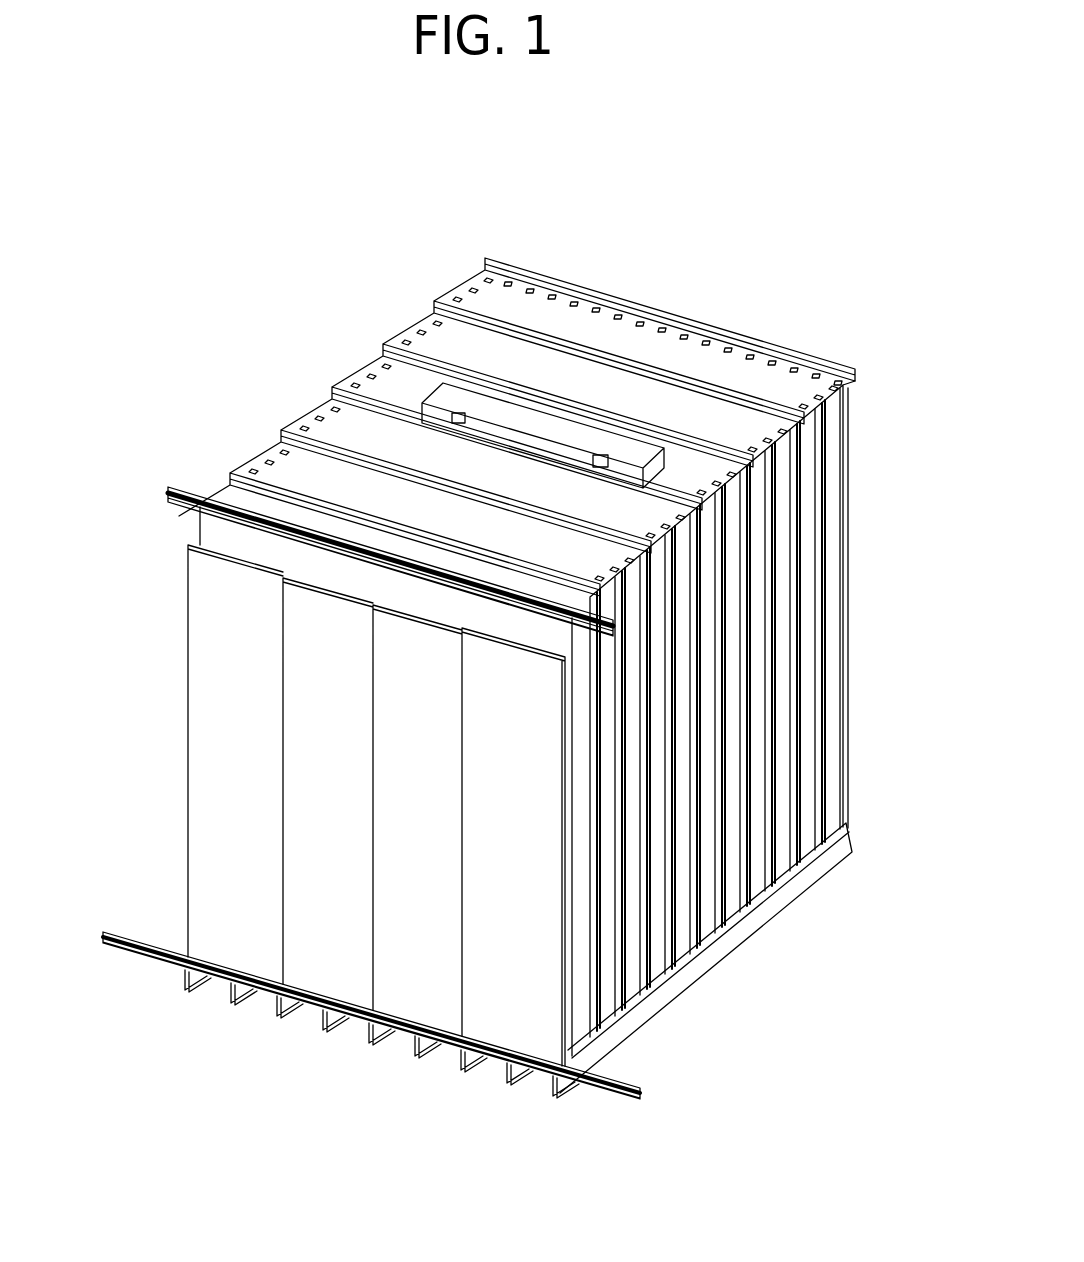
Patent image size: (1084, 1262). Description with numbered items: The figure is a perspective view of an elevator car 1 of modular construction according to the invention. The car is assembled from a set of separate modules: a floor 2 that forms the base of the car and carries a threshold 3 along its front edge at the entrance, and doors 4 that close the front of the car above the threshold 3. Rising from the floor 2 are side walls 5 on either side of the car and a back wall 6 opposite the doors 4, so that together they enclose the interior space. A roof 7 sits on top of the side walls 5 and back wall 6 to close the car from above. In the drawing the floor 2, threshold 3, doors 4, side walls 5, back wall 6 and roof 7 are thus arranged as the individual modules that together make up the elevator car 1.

The elevator car 1 is at (786, 951).
The floor 2 is at (682, 1006).
The threshold 3 is at (120, 972).
The doors 4 is at (322, 787).
The side walls 5 is at (236, 438).
The back wall 6 is at (682, 298).
The roof 7 is at (410, 450).